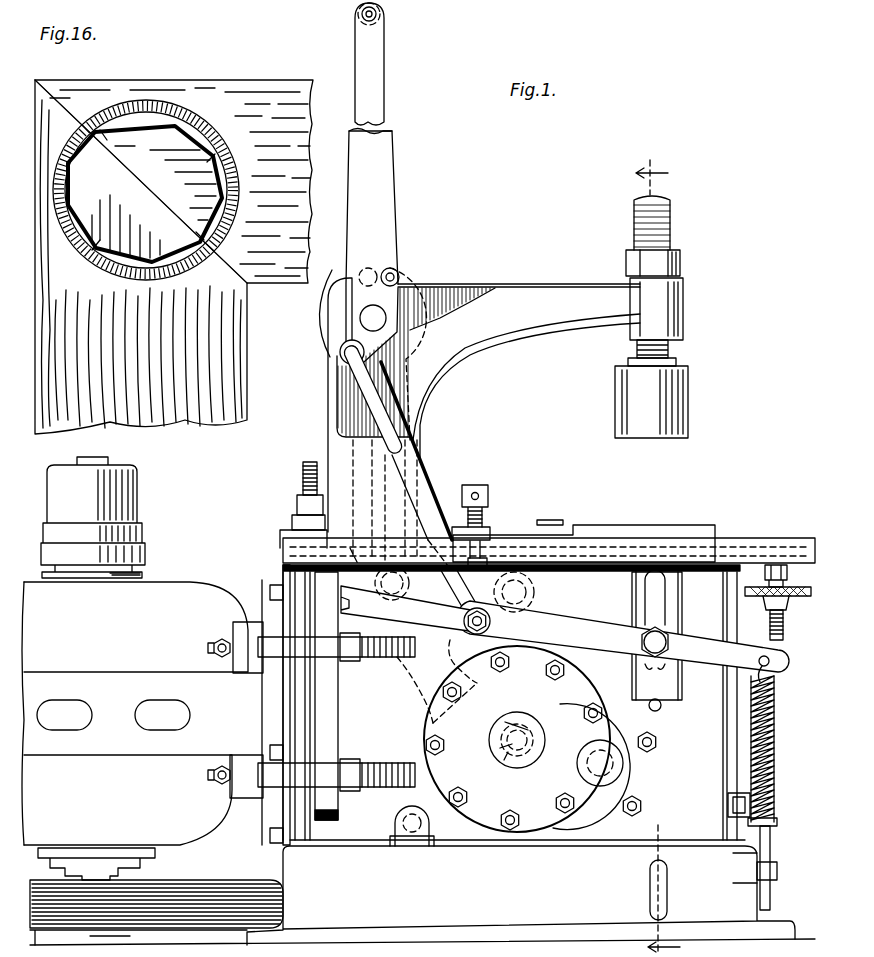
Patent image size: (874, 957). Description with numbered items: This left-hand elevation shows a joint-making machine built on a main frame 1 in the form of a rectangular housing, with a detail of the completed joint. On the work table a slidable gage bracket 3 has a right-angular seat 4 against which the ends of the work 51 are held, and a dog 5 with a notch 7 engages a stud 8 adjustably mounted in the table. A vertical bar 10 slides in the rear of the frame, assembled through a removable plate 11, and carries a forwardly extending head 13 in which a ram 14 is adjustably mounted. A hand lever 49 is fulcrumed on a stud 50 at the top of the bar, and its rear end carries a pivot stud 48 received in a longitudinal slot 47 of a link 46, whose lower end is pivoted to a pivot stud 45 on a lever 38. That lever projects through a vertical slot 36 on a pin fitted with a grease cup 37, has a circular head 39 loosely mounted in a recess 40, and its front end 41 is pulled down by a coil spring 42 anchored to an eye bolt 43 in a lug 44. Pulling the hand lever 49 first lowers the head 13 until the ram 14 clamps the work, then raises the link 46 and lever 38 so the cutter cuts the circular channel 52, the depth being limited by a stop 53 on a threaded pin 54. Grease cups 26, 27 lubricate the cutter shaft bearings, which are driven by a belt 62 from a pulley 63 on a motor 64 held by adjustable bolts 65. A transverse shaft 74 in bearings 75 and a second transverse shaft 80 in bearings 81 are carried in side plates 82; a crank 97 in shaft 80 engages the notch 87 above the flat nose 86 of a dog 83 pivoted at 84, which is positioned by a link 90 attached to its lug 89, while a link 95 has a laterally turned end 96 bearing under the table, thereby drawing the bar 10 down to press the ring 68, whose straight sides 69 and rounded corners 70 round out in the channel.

In FIG. 1, the main frame 1 is at (492, 706).
In FIG. 1, the gage bracket 3 is at (602, 540).
In FIG. 1, the right-angular seat 4 is at (652, 528).
In FIG. 1, the dog 5 is at (518, 536).
In FIG. 1, the notch 7 is at (462, 530).
In FIG. 1, the stud 8 is at (490, 528).
In FIG. 1, the vertical bar 10 is at (336, 450).
In FIG. 1, the removable plate 11 is at (287, 710).
In FIG. 1, the head 13 is at (522, 288).
In FIG. 1, the ram 14 is at (686, 400).
In FIG. 1, the grease cup 26 is at (777, 780).
In FIG. 1, the grease cup 27 is at (775, 712).
In FIG. 1, the vertical slot 36 is at (668, 598).
In FIG. 1, the grease cup 37 is at (648, 650).
In FIG. 1, the lever 38 is at (696, 638).
In FIG. 1, the circular head 39 is at (408, 609).
In FIG. 1, the recess 40 is at (292, 580).
In FIG. 1, the front end of lever 41 is at (782, 664).
In FIG. 1, the coil spring 42 is at (775, 742).
In FIG. 1, the eye bolt 43 is at (772, 838).
In FIG. 1, the lug 44 is at (779, 872).
In FIG. 1, the pivot stud 45 is at (464, 623).
In FIG. 1, the link 46 is at (418, 472).
In FIG. 1, the longitudinal slot 47 is at (386, 412).
In FIG. 1, the pivot stud 48 is at (342, 358).
In FIG. 1, the hand lever 49 is at (390, 216).
In FIG. 1, the stud 50 is at (368, 318).
In FIG. 16, the work 51 is at (264, 80).
In FIG. 16, the circular channel 52 is at (150, 284).
In FIG. 1, the stop 53 is at (779, 587).
In FIG. 1, the threaded pin 54 is at (784, 620).
In FIG. 1, the belt 62 is at (232, 892).
In FIG. 1, the pulley 63 is at (148, 878).
In FIG. 1, the motor 64 is at (135, 651).
In FIG. 1, the bolts 65 is at (212, 646).
In FIG. 16, the ring 68 is at (222, 206).
In FIG. 16, the sides 69 is at (198, 140).
In FIG. 16, the rounded corners 70 is at (118, 268).
In FIG. 1, the transverse shaft 74 is at (590, 760).
In FIG. 1, the bearings 75 is at (492, 734).
In FIG. 1, the transverse shaft 80 is at (528, 728).
In FIG. 1, the bearings 81 is at (623, 766).
In FIG. 1, the side plates 82 is at (510, 759).
In FIG. 1, the dog 83 is at (406, 672).
In FIG. 1, the pivot 84 is at (536, 593).
In FIG. 1, the flat nose 86 is at (452, 716).
In FIG. 1, the notch 87 is at (463, 661).
In FIG. 1, the lug 89 is at (404, 583).
In FIG. 1, the link 90 is at (424, 346).
In FIG. 1, the link 95 is at (352, 498).
In FIG. 1, the laterally turned end 96 is at (346, 550).
In FIG. 1, the crank 97 is at (498, 752).